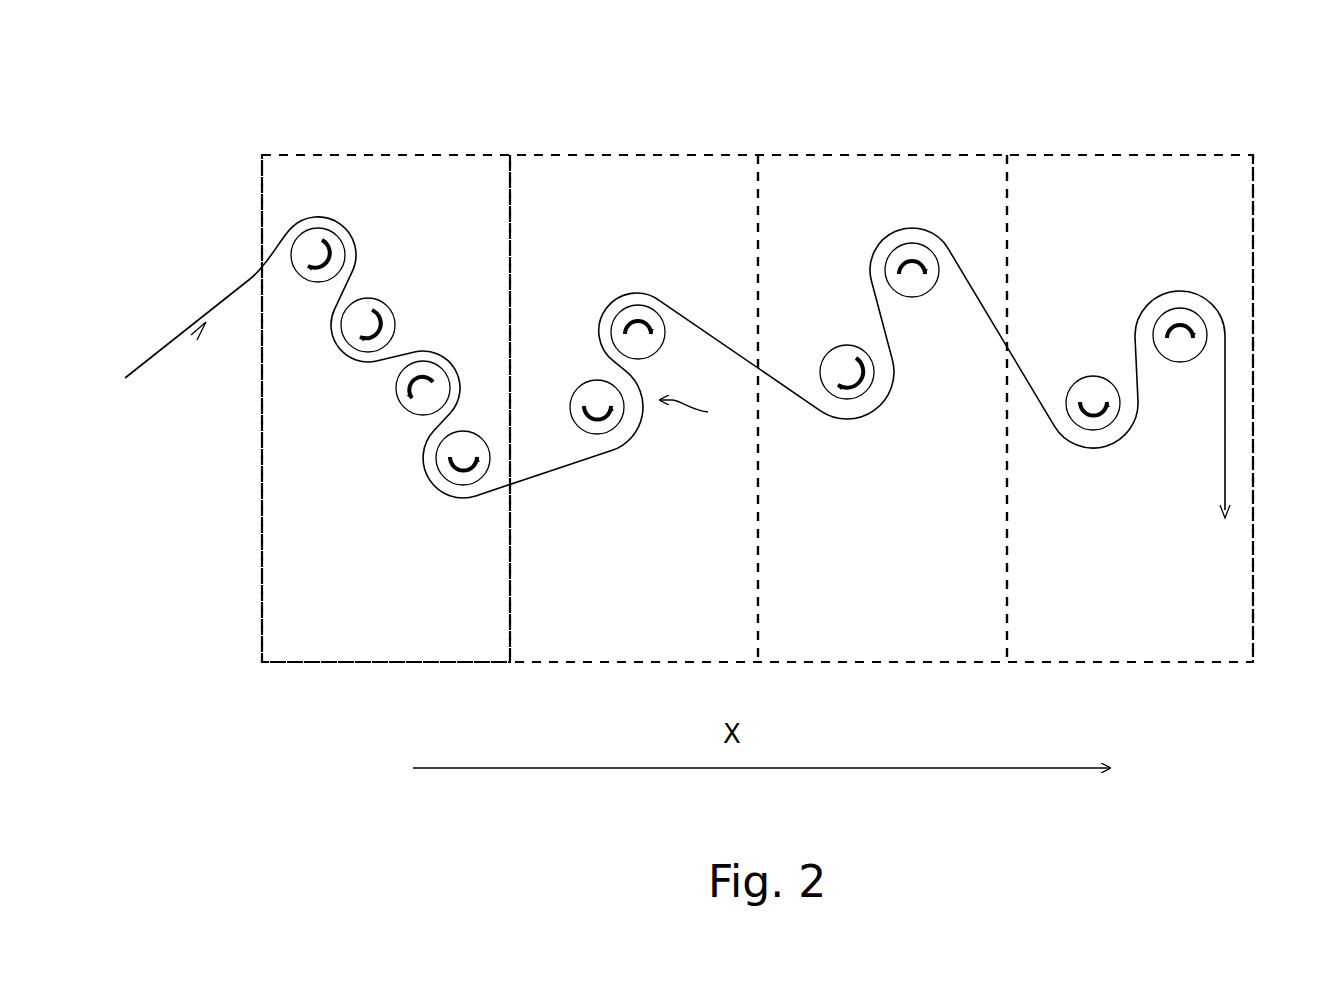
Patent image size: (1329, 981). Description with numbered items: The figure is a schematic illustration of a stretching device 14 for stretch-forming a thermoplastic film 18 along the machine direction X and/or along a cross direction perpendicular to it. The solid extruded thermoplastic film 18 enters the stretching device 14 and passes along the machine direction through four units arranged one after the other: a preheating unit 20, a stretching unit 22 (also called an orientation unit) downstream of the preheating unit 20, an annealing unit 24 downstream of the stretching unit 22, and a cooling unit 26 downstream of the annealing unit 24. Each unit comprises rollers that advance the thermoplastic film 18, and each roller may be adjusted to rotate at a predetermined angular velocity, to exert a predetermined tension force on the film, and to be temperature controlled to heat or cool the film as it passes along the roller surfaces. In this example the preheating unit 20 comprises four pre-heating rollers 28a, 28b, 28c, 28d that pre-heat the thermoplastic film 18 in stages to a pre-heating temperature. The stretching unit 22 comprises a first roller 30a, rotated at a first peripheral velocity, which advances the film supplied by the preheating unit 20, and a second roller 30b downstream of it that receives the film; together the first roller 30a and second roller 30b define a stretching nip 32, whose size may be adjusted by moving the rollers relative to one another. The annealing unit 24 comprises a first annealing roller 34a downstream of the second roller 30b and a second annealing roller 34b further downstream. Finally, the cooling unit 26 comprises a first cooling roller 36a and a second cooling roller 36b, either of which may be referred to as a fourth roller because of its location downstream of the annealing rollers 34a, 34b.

The stretching device 14 is at (210, 143).
The thermoplastic film 18 is at (246, 280).
The preheating unit 20 is at (358, 155).
The stretching unit 22 is at (608, 155).
The annealing unit 24 is at (871, 155).
The cooling unit 26 is at (1113, 155).
The pre-heating roller 28a is at (309, 283).
The pre-heating roller 28b is at (386, 302).
The pre-heating roller 28c is at (408, 412).
The pre-heating roller 28d is at (462, 430).
The first roller 30a is at (574, 424).
The second roller 30b is at (656, 352).
The stretching nip 32 is at (699, 414).
The first annealing roller 34a is at (828, 348).
The second annealing roller 34b is at (920, 296).
The first cooling roller 36a is at (1092, 378).
The second cooling roller 36b is at (1178, 362).